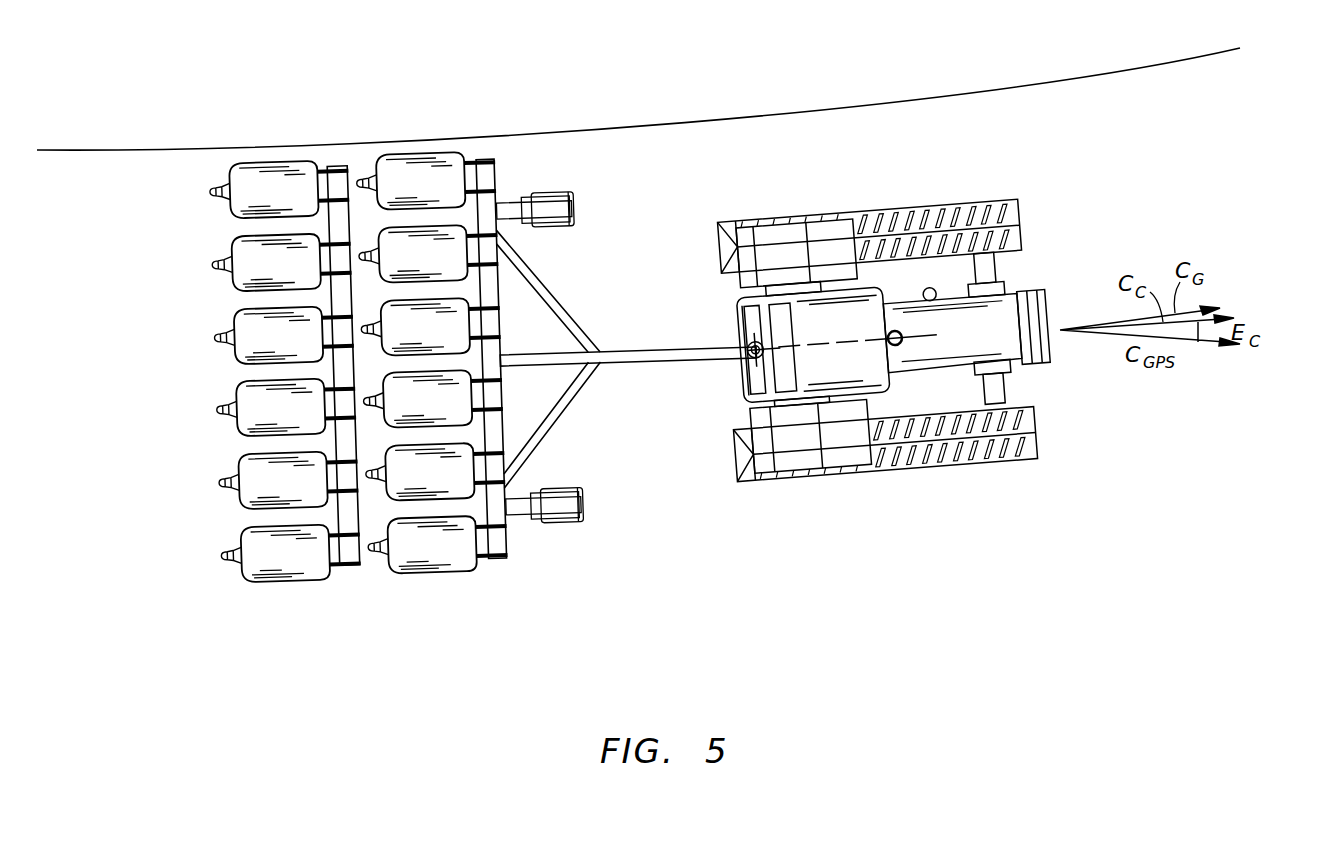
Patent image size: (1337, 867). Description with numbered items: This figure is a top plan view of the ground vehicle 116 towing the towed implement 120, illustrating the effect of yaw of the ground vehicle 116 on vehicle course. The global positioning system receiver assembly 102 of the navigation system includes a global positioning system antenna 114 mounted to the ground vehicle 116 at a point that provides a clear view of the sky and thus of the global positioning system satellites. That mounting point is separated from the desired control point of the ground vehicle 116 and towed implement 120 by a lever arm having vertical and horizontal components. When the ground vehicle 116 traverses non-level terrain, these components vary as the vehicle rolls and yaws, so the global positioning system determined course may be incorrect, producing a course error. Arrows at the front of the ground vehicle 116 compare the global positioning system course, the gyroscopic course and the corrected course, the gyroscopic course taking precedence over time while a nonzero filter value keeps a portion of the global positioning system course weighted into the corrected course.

The global positioning system receiver assembly 102 is at (748, 343).
The global positioning system antenna 114 is at (738, 360).
The ground vehicle 116 is at (917, 455).
The towed implement 120 is at (510, 538).